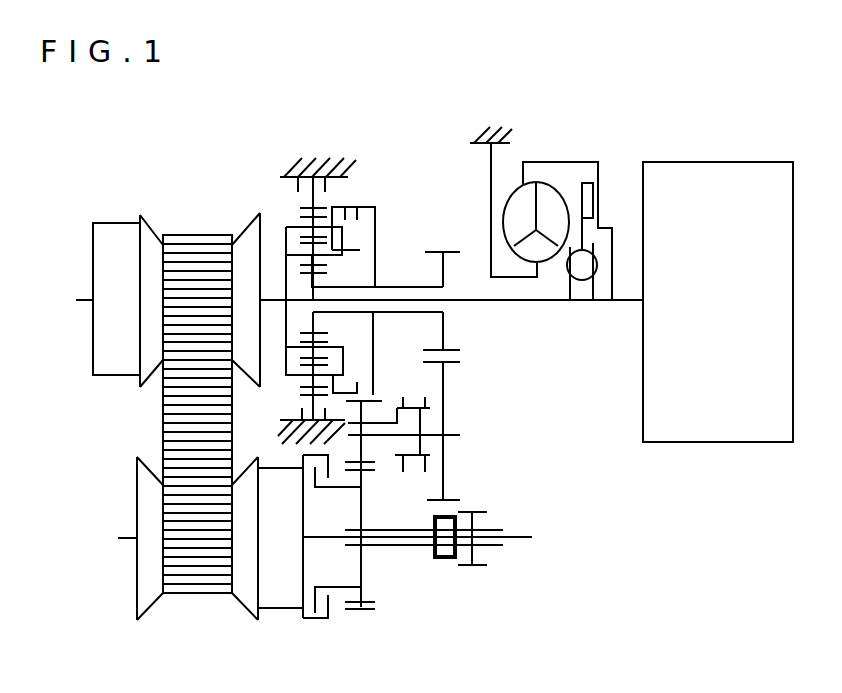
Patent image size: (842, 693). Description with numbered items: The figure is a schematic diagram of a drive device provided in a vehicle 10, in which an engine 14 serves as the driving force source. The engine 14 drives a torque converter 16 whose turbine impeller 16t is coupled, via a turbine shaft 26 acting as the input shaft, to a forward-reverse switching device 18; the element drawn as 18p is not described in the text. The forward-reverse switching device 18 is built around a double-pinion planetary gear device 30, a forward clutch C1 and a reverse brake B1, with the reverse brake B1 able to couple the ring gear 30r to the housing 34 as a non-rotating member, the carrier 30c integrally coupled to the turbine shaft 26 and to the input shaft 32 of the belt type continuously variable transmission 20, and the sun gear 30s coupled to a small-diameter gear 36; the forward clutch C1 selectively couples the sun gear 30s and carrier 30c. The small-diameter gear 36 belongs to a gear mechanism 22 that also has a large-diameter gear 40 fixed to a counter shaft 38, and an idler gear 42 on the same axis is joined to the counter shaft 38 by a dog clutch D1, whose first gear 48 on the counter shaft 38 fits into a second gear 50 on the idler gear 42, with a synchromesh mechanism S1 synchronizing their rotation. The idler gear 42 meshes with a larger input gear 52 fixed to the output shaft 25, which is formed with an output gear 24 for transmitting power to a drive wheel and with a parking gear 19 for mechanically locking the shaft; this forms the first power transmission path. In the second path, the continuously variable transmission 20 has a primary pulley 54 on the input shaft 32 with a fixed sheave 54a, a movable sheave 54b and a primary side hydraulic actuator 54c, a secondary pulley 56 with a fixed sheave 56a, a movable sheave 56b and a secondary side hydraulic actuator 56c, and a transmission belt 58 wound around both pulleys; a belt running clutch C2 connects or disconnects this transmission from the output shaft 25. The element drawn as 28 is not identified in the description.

The vehicle 10 is at (565, 97).
The engine 14 is at (693, 172).
The torque converter 16 is at (548, 270).
The turbine impeller 16t is at (552, 204).
The forward-reverse switching device 18 is at (365, 186).
The pump impeller 18p is at (512, 170).
The parking gear 19 is at (447, 558).
The belt type continuously variable transmission 20 is at (185, 190).
The gear mechanism 22 is at (476, 355).
The output gear 24 is at (466, 567).
The output shaft 25 is at (412, 546).
The turbine shaft 26 is at (459, 300).
The oil pump 28 is at (594, 200).
The planetary gear device 30 is at (365, 240).
The ring gear 30r is at (300, 207).
The sun gear 30s is at (318, 328).
The carrier 30c is at (360, 251).
The input shaft 32 is at (271, 300).
The housing 34 is at (321, 168).
The small-diameter gear 36 is at (448, 252).
The counter shaft 38 is at (458, 434).
The large-diameter gear 40 is at (437, 508).
The idler gear 42 is at (348, 466).
The first gear 48 is at (428, 472).
The second gear 50 is at (397, 418).
The input gear 52 is at (368, 606).
The primary pulley 54 is at (68, 272).
The fixed sheave 54a is at (243, 243).
The movable sheave 54b is at (150, 238).
The primary side hydraulic actuator 54c is at (109, 232).
The secondary pulley 56 is at (105, 539).
The fixed sheave 56a is at (143, 503).
The movable sheave 56b is at (243, 596).
The secondary side hydraulic actuator 56c is at (272, 608).
The transmission belt 58 is at (183, 450).
The reverse brake B1 is at (303, 197).
The forward clutch C1 is at (353, 238).
The belt running clutch C2 is at (341, 622).
The dog clutch D1 is at (410, 392).
The synchromesh mechanism S1 is at (400, 456).